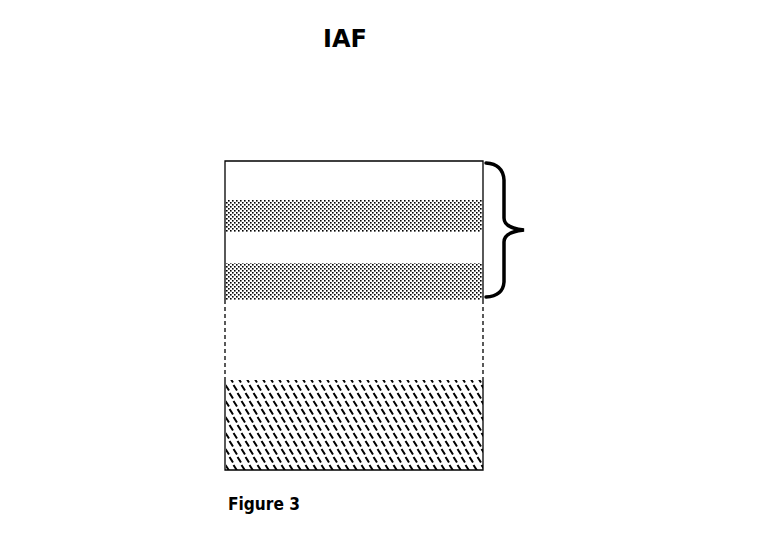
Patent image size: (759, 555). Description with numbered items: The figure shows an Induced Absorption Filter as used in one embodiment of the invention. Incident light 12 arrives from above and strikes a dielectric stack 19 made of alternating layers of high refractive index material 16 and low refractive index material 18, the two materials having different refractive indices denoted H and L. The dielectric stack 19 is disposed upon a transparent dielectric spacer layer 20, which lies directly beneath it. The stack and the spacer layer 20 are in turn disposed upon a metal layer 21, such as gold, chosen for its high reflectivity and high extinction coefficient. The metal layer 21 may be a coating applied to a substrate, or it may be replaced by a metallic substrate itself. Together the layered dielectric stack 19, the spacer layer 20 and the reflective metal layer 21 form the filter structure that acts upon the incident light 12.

The incident light 12 is at (349, 114).
The high refractive index material 16 is at (243, 180).
The low refractive index material 18 is at (348, 283).
The dielectric stack 19 is at (589, 230).
The dielectric spacer layer 20 is at (478, 340).
The metal layer 21 is at (476, 416).